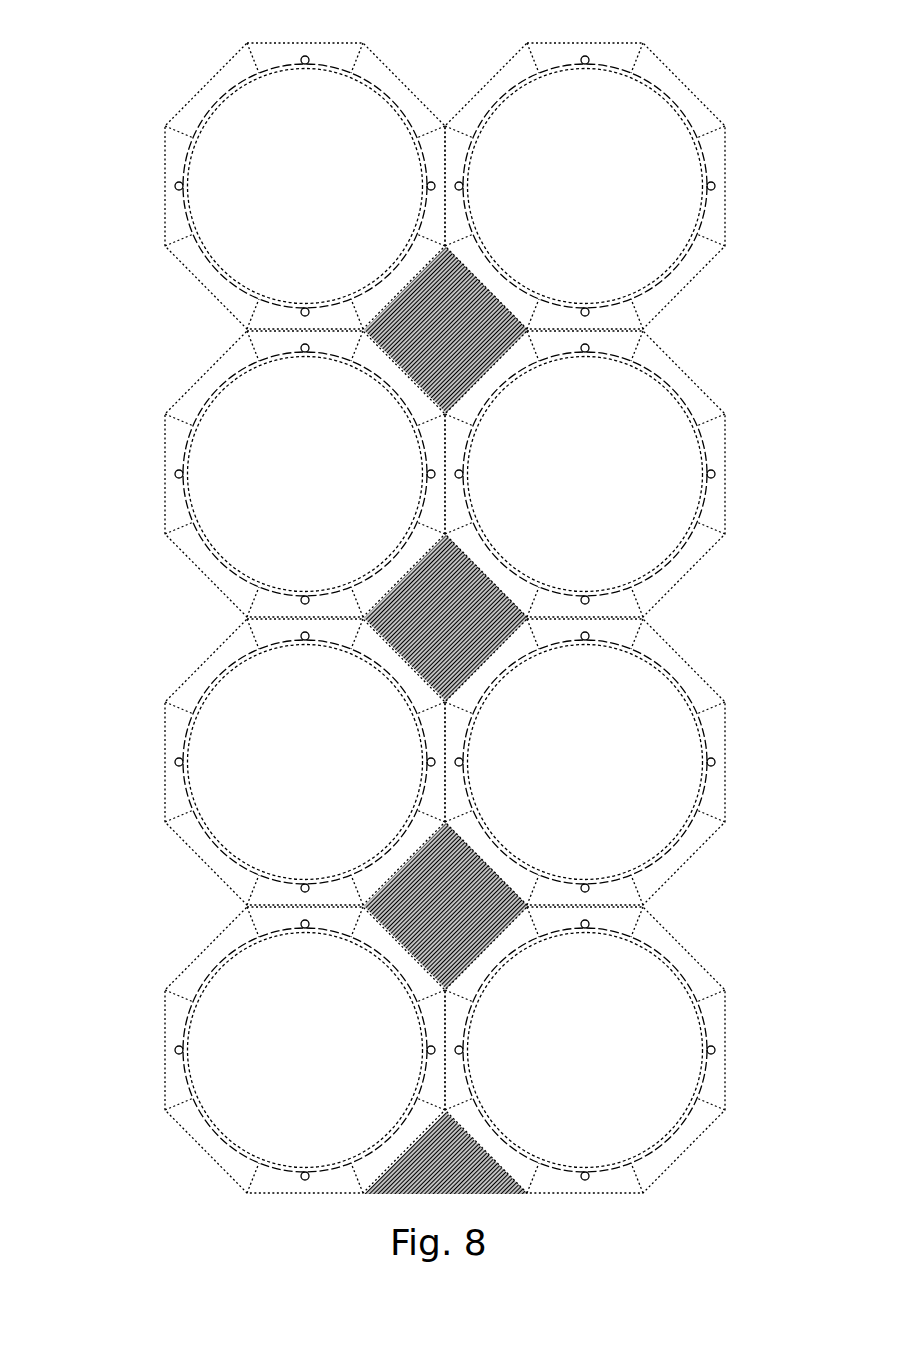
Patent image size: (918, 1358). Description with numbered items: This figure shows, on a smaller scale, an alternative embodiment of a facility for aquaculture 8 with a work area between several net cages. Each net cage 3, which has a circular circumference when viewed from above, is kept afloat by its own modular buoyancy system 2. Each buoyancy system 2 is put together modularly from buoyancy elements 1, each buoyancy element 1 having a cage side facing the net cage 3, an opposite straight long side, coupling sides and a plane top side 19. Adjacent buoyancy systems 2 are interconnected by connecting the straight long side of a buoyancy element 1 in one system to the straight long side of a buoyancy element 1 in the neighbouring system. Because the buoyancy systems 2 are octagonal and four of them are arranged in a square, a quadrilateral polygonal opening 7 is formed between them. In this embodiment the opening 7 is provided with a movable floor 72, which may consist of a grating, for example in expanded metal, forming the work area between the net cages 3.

The buoyancy element 1 is at (186, 88).
The modular buoyancy system 2 is at (415, 448).
The net cage 3 is at (280, 500).
The polygonal opening 7 is at (473, 920).
The facility for aquaculture 8 is at (706, 86).
The plane top side 19 is at (212, 573).
The movable floor 72 is at (437, 607).